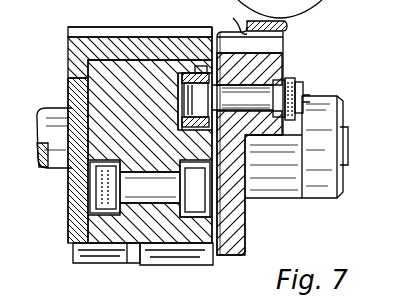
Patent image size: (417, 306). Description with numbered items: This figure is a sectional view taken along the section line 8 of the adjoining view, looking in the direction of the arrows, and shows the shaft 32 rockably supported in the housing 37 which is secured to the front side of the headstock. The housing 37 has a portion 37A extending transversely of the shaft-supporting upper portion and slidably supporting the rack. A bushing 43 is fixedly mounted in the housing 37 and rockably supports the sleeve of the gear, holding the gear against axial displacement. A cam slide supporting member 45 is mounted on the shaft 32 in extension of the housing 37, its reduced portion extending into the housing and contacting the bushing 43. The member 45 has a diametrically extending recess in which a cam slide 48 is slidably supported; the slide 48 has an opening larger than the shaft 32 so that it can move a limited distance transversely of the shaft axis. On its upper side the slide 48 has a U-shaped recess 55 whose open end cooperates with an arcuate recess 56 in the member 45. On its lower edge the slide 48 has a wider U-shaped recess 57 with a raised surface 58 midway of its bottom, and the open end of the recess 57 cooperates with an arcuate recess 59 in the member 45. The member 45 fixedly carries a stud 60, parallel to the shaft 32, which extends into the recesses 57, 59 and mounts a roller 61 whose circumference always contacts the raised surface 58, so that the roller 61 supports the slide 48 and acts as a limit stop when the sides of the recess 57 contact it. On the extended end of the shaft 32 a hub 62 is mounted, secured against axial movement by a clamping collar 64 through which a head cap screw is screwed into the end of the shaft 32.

The section line 8 is at (209, 37).
The shaft 32 is at (45, 170).
The housing 37 is at (68, 46).
The housing portion 37A is at (327, 1).
The bushing 43 is at (68, 92).
The cam slide supporting member 45 is at (150, 34).
The cam slide 48 is at (180, 138).
The U-shaped recess 55 is at (217, 122).
The arcuate recess 56 is at (182, 73).
The U-shaped recess 57 is at (222, 168).
The raised surface 58 is at (200, 62).
The arcuate recess 59 is at (195, 258).
The stud 60 is at (140, 263).
The roller 61 is at (243, 65).
The hub 62 is at (246, 248).
The clamping collar 64 is at (329, 97).